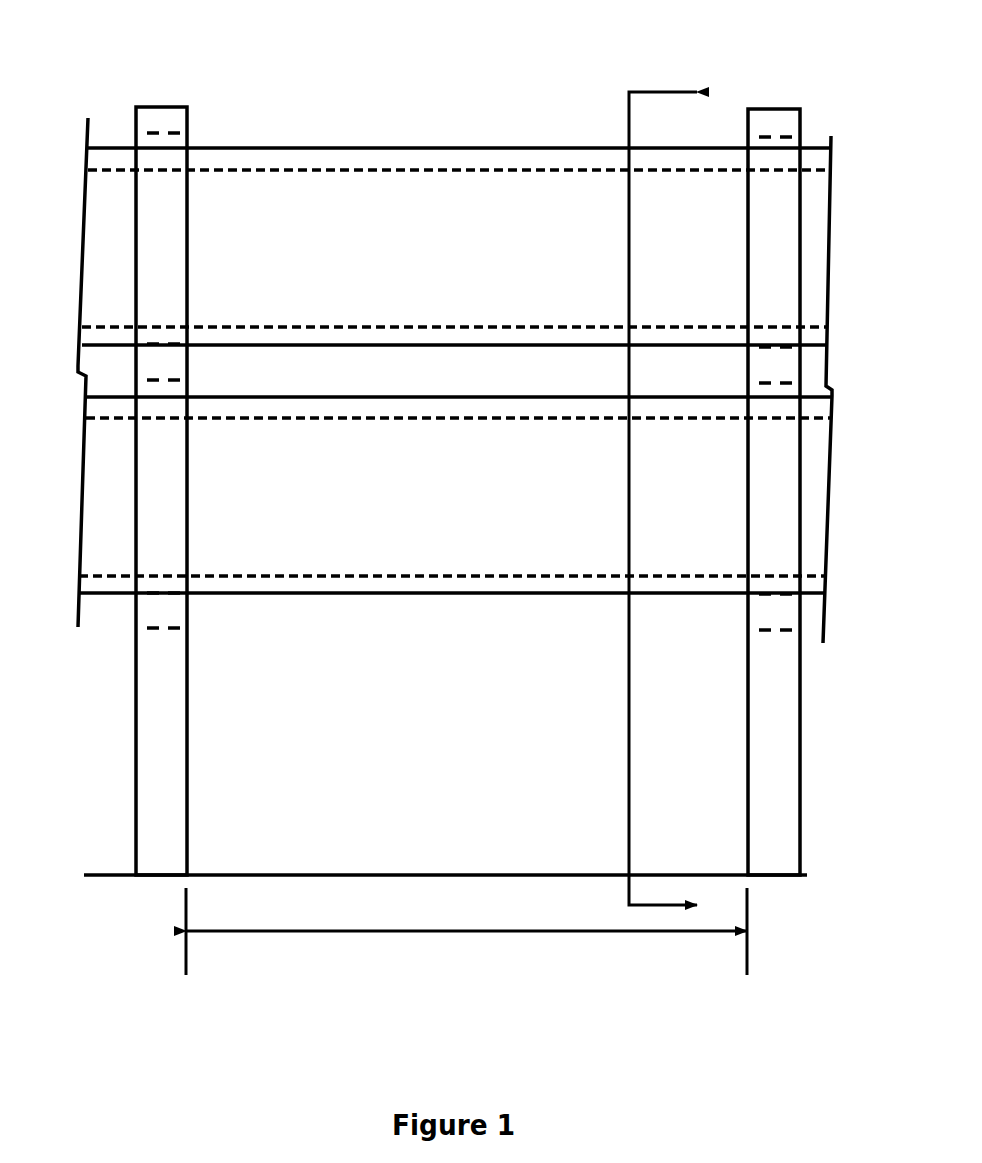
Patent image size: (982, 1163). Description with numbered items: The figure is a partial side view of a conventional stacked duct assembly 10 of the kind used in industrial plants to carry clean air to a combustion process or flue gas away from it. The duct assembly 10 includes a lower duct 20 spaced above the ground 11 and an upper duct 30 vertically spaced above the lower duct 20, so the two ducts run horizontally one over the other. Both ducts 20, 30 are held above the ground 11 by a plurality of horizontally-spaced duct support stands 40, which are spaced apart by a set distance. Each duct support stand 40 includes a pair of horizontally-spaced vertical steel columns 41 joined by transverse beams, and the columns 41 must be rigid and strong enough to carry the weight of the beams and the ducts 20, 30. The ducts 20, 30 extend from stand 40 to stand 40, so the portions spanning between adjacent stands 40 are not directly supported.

The duct assembly 10 is at (148, 65).
The ground 11 is at (343, 875).
The lower duct 20 is at (357, 594).
The upper duct 30 is at (360, 148).
The duct support stand 40 is at (190, 115).
The vertical steel column 41 is at (162, 210).